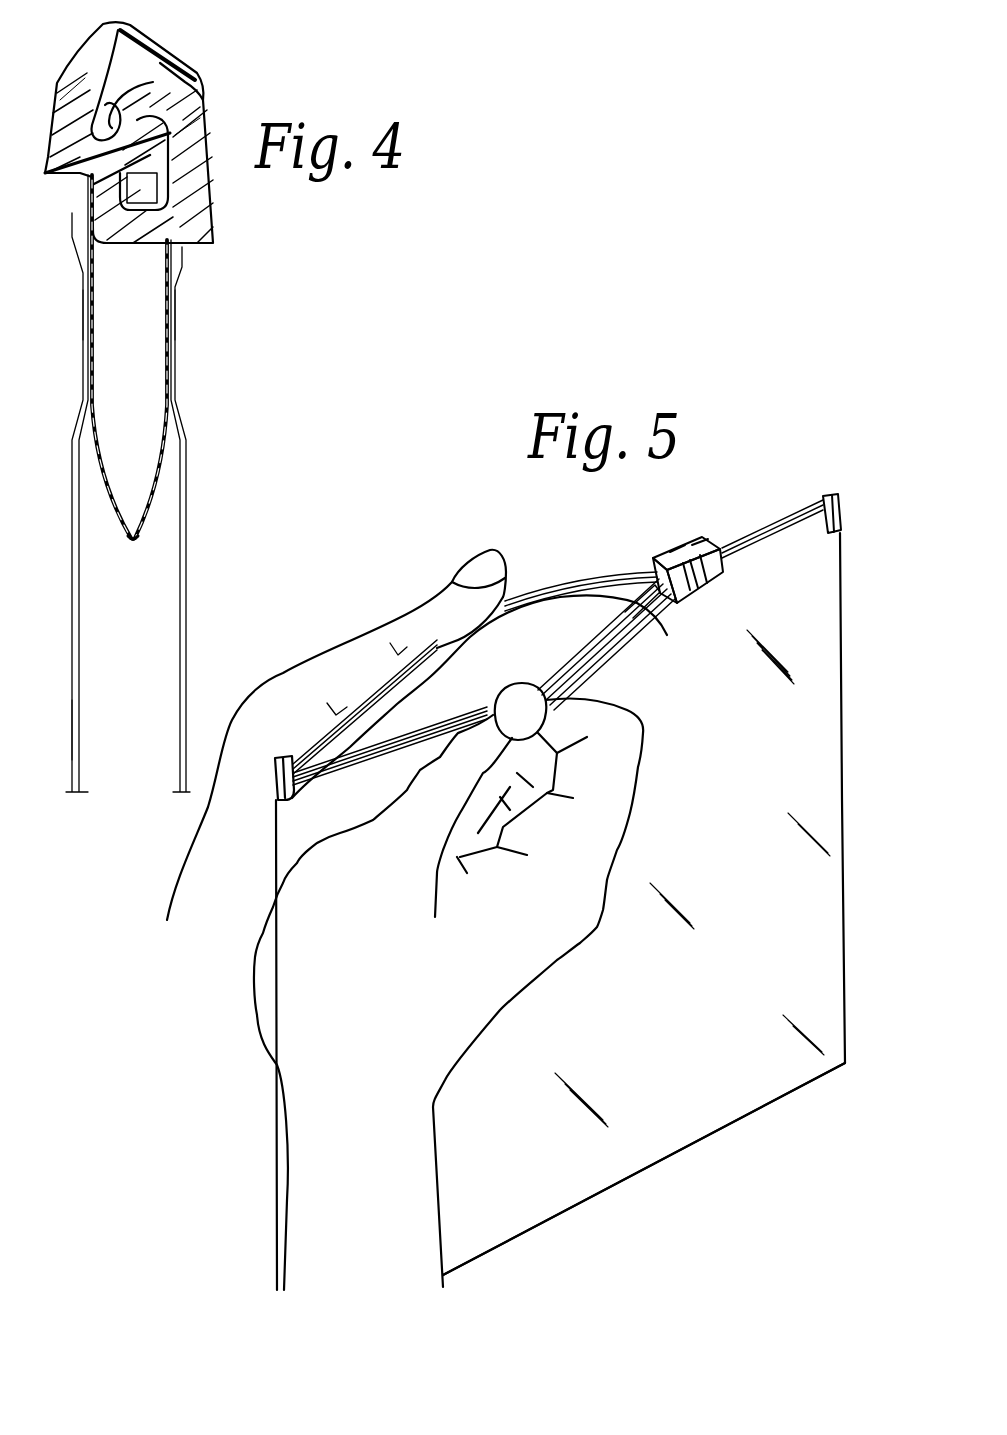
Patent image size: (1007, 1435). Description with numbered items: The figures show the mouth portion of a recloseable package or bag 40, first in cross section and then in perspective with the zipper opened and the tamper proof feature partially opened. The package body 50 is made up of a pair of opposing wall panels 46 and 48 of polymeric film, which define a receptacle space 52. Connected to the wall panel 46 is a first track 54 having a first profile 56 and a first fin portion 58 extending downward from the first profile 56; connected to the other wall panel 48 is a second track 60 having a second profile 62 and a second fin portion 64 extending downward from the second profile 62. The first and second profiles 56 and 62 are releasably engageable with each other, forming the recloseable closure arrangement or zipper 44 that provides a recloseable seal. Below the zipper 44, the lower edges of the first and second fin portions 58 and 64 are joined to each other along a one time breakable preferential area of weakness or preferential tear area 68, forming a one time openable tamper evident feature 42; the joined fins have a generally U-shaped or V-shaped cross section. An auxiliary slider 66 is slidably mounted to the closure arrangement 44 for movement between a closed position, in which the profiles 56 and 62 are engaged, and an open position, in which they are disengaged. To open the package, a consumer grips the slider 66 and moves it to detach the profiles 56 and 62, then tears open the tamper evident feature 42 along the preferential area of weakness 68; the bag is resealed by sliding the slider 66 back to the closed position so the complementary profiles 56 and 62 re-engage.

In FIG. 5, the recloseable package 40 is at (757, 1185).
In FIG. 4, the tamper evident feature 42 is at (148, 522).
In FIG. 4, the recloseable closure arrangement 44 is at (178, 45).
In FIG. 4, the wall panel 46 is at (73, 650).
In FIG. 5, the wall panel 46 is at (523, 630).
In FIG. 4, the wall panel 48 is at (188, 660).
In FIG. 5, the wall panel 48 is at (662, 1107).
In FIG. 5, the package body 50 is at (722, 808).
In FIG. 4, the receptacle space 52 is at (132, 725).
In FIG. 4, the first track 54 is at (102, 312).
In FIG. 4, the first profile 56 is at (82, 78).
In FIG. 4, the first fin portion 58 is at (100, 485).
In FIG. 5, the first fin portion 58 is at (570, 598).
In FIG. 4, the second track 60 is at (155, 315).
In FIG. 4, the second profile 62 is at (190, 133).
In FIG. 4, the second fin portion 64 is at (163, 467).
In FIG. 5, the second fin portion 64 is at (603, 637).
In FIG. 5, the slider 66 is at (697, 557).
In FIG. 4, the preferential area of weakness 68 is at (130, 540).
In FIG. 5, the preferential area of weakness 68 is at (637, 597).